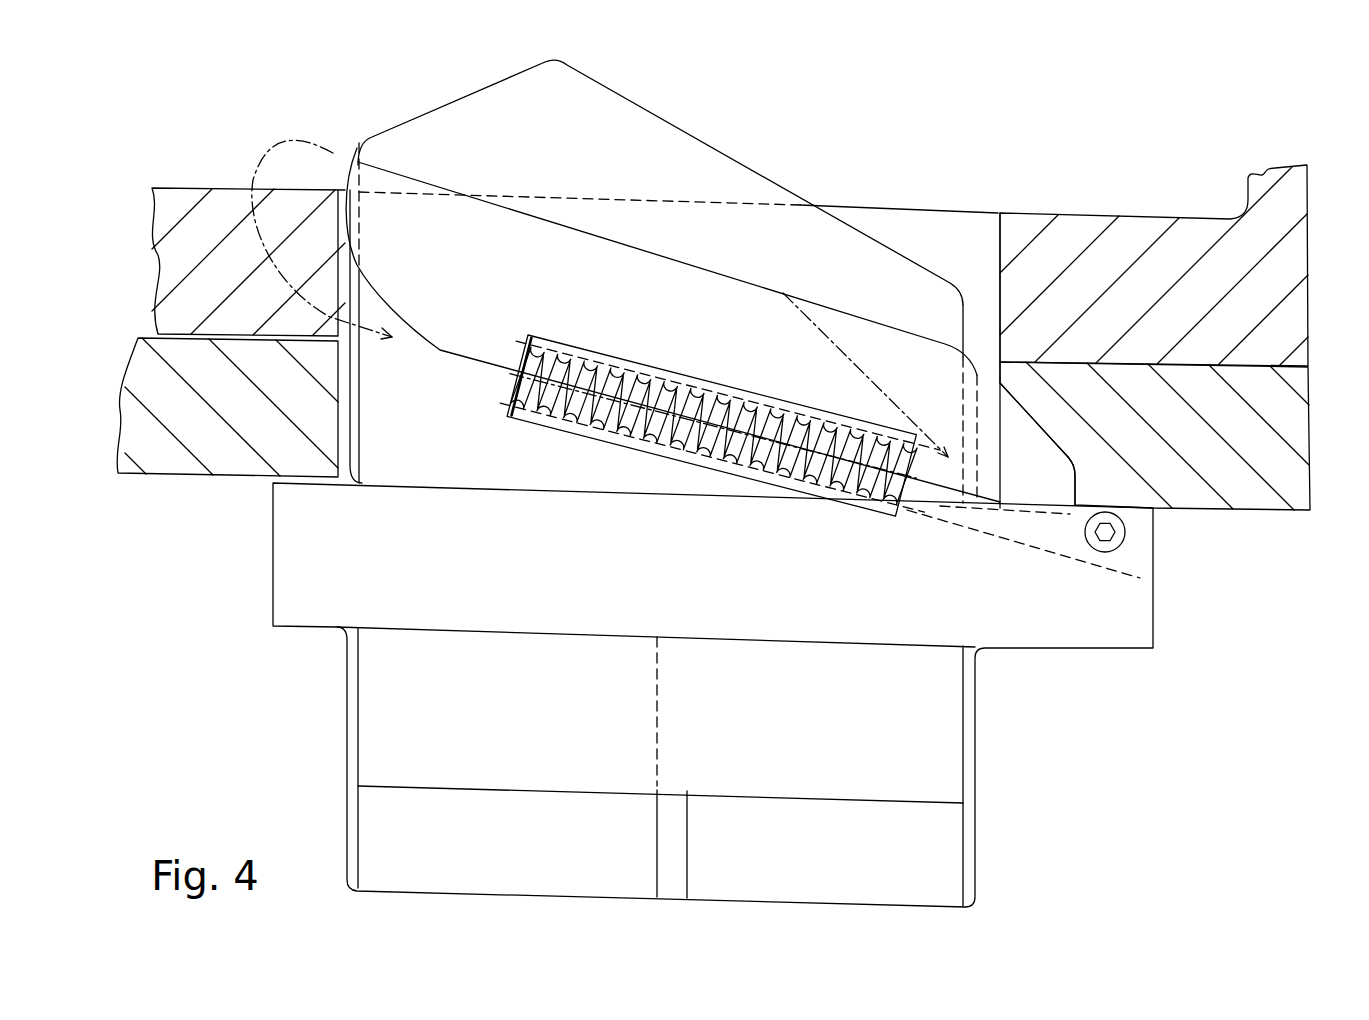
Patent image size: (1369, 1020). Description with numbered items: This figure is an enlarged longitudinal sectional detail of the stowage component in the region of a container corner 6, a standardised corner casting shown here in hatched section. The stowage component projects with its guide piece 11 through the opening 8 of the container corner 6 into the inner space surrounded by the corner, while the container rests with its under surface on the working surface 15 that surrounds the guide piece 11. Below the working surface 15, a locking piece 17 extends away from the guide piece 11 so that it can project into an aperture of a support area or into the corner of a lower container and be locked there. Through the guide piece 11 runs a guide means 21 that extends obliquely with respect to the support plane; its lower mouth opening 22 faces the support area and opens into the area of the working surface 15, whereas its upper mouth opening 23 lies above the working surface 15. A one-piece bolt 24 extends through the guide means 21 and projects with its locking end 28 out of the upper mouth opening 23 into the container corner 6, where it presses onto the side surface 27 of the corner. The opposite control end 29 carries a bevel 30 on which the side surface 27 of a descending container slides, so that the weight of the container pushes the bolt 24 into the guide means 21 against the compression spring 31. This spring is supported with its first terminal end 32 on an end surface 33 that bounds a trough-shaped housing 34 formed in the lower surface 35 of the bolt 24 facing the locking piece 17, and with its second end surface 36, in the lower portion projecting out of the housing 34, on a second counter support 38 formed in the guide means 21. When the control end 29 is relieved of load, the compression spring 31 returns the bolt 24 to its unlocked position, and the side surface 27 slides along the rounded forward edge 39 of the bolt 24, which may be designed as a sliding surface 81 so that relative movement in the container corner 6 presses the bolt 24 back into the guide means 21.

The container corner 6 is at (170, 278).
The opening 8 is at (352, 412).
The guide piece 11 is at (650, 123).
The working surface 15 is at (1153, 517).
The locking piece 17 is at (940, 748).
The guide means 21 is at (400, 338).
The lower mouth opening 22 is at (963, 405).
The upper mouth opening 23 is at (360, 223).
The bolt 24 is at (643, 332).
The side surface 27 is at (192, 195).
The locking end 28 is at (257, 150).
The control end 29 is at (1075, 480).
The bevel 30 is at (1030, 413).
The compression spring 31 is at (638, 427).
The first terminal end 32 is at (893, 493).
The end surface 33 is at (914, 470).
The housing 34 is at (692, 382).
The lower surface 35 is at (485, 363).
The second end surface 36 is at (520, 377).
The second counter support 38 is at (513, 417).
The rounded forward edge 39 is at (367, 280).
The sliding surface 81 is at (387, 303).